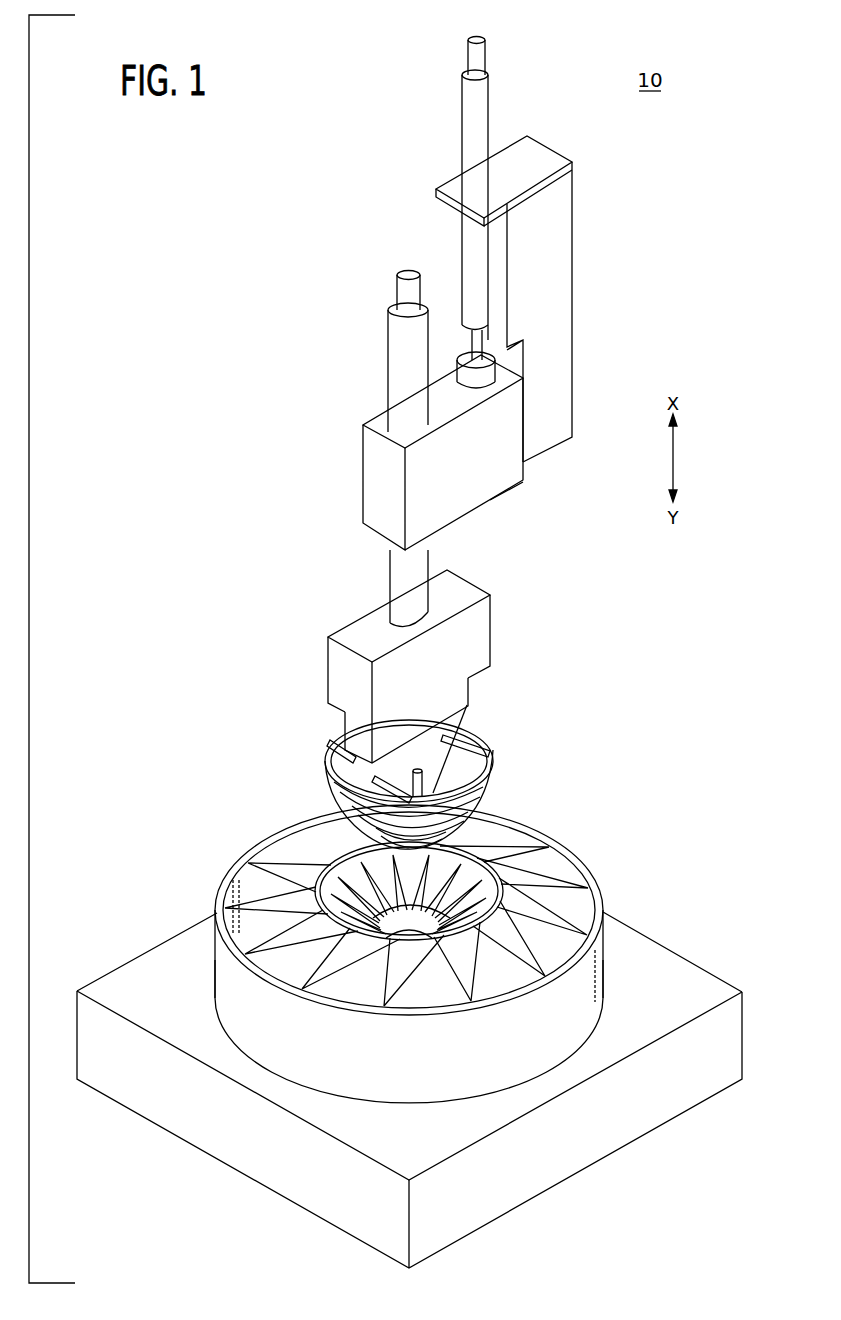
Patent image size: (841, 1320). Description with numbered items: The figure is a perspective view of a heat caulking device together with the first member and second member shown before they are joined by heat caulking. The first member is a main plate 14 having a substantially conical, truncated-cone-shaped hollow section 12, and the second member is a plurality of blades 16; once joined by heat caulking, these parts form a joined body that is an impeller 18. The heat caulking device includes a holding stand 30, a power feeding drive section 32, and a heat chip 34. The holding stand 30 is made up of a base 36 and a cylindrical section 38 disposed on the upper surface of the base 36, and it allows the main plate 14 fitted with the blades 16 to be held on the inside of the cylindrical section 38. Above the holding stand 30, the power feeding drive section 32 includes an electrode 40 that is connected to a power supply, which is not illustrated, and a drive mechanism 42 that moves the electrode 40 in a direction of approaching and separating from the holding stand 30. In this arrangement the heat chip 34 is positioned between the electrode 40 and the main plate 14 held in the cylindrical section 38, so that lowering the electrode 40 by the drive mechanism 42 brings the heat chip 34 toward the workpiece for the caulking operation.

The hollow section 12 is at (433, 912).
The main plate 14 is at (335, 872).
The blades 16 is at (268, 907).
The impeller 18 is at (393, 935).
The holding stand 30 is at (409, 1049).
The power feeding drive section 32 is at (335, 608).
The heat chip 34 is at (492, 738).
The base 36 is at (697, 980).
The cylindrical section 38 is at (603, 950).
The electrode 40 is at (453, 690).
The drive mechanism 42 is at (582, 303).